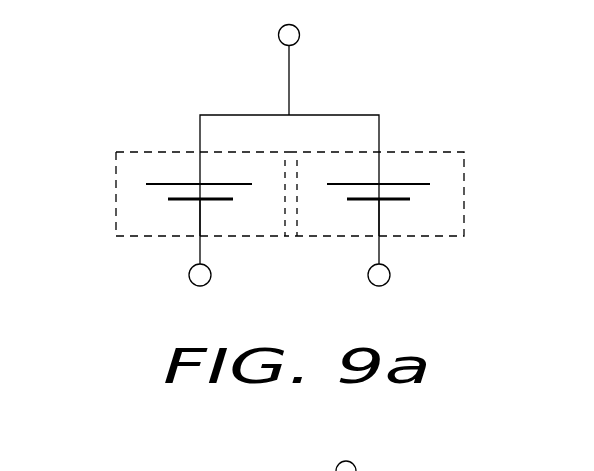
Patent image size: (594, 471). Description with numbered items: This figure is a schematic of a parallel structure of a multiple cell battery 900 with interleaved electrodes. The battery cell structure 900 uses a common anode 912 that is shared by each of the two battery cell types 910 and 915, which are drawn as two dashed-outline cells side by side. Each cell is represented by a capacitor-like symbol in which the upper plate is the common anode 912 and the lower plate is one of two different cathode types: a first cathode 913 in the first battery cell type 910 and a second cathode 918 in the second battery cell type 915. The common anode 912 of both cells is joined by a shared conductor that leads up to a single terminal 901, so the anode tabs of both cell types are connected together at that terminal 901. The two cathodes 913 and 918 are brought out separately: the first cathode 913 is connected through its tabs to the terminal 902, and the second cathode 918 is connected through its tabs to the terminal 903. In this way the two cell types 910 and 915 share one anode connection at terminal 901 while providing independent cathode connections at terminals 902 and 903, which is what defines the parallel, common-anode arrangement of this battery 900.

The multiple cell battery 900 is at (337, 34).
The terminal 901 is at (277, 36).
The terminal 902 is at (189, 276).
The terminal 903 is at (390, 274).
The battery cell type 910 is at (133, 151).
The battery cell type 915 is at (447, 151).
The common anode 912 is at (156, 183).
The cathode 913 is at (172, 203).
The cathode 918 is at (400, 203).